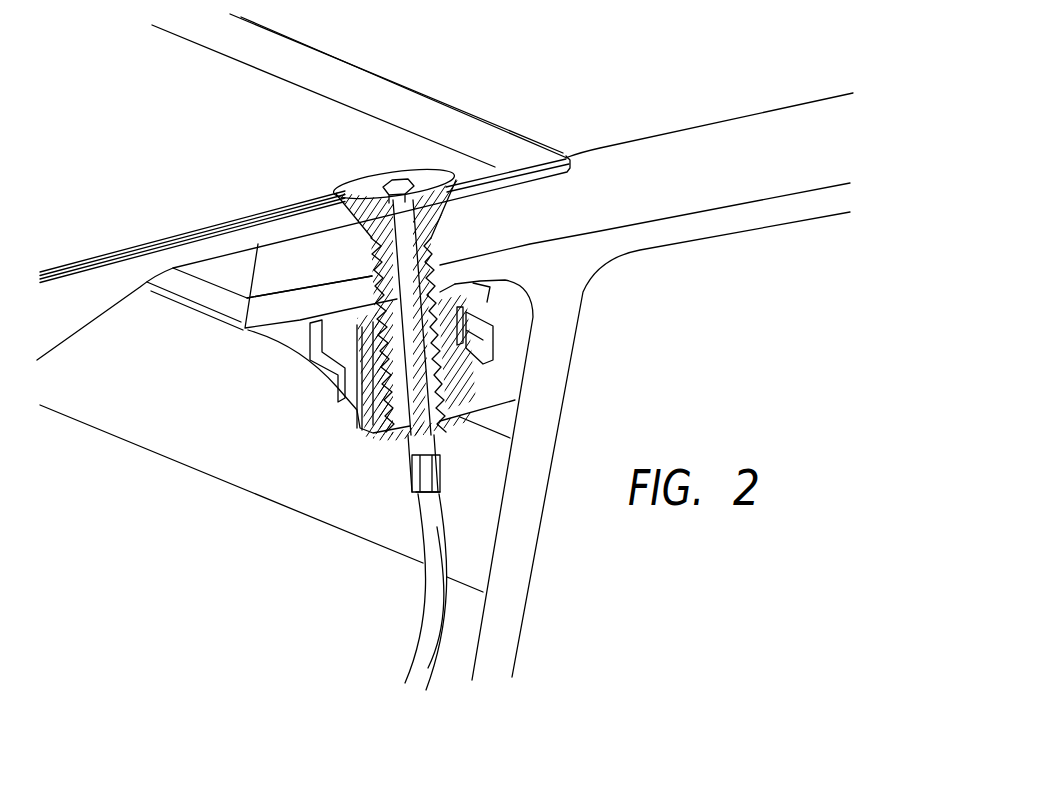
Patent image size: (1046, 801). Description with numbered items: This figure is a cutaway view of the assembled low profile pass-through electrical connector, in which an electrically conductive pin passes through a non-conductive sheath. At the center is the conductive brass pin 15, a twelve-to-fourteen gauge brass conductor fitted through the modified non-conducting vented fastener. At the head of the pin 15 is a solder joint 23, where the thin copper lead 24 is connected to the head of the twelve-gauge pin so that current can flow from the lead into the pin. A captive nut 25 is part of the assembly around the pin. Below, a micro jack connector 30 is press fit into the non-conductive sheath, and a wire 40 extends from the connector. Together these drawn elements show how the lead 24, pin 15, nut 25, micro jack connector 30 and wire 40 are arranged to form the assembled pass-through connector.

The conductive brass pin 15 is at (415, 244).
The solder joint 23 is at (423, 190).
The thin copper lead 24 is at (277, 218).
The captive nut 25 is at (297, 348).
The micro jack connector 30 is at (428, 468).
The wire 40 is at (430, 593).